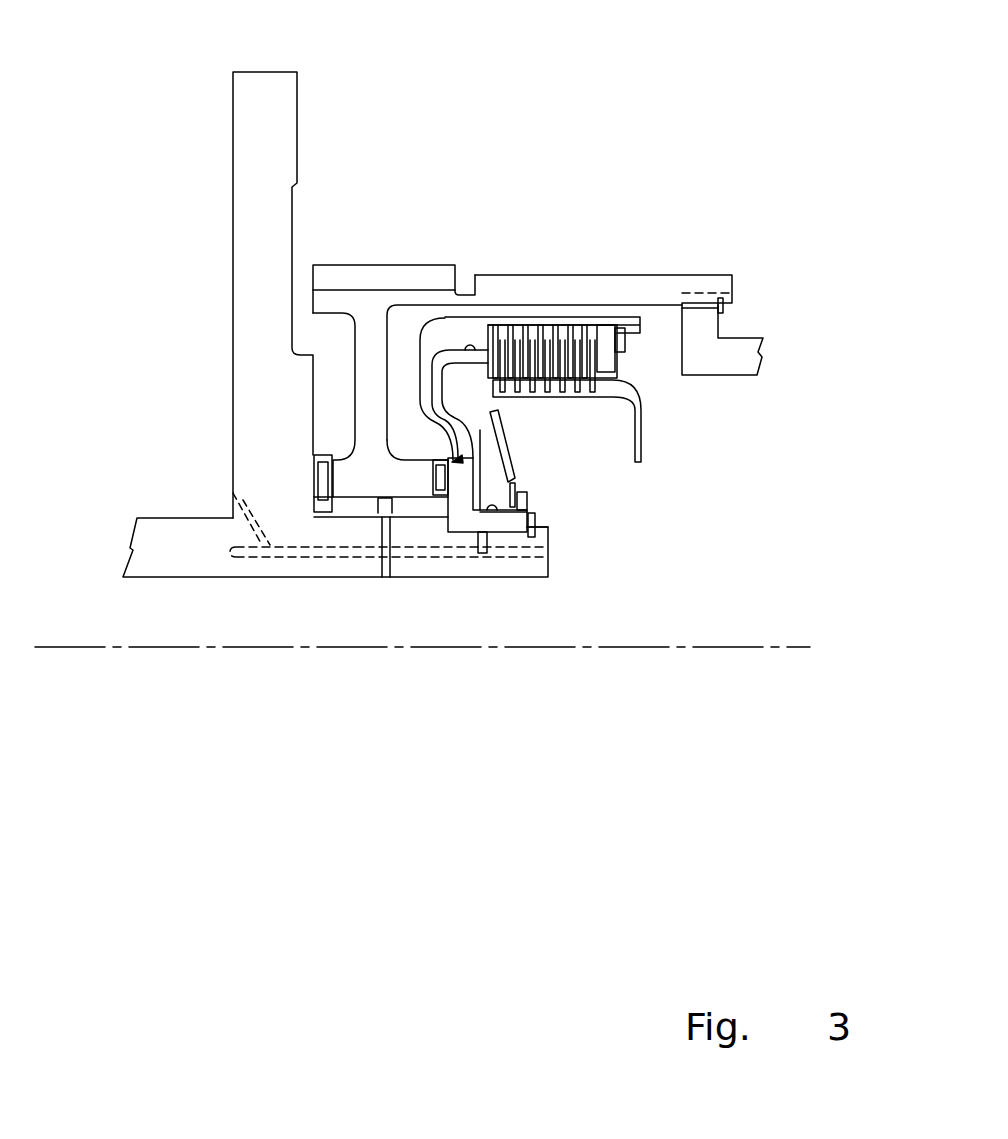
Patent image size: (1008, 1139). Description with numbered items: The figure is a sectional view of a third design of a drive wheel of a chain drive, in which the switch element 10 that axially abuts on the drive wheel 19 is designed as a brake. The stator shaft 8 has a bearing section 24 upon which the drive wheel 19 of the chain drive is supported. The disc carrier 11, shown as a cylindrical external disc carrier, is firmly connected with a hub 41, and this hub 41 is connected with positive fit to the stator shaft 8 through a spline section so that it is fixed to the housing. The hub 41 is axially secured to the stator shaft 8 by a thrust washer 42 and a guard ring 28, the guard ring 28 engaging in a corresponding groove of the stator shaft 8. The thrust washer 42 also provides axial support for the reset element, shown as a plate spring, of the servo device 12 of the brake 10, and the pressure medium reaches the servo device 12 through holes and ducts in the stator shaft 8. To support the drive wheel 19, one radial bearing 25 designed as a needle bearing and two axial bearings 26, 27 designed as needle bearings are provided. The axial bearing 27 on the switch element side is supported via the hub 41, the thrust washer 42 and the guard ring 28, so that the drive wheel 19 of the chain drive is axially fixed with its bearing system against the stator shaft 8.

The stator shaft 8 is at (268, 320).
The drive wheel 19 is at (387, 260).
The switch element 10 is at (546, 352).
The disc carrier 11 is at (460, 433).
The servo device 12 is at (487, 433).
The thrust washer 42 is at (523, 498).
The hub 41 is at (503, 520).
The bearing section 24 is at (178, 558).
The axial bearing 26 is at (323, 478).
The radial bearing 25 is at (357, 505).
The axial bearing 27 is at (438, 475).
The guard ring 28 is at (545, 520).